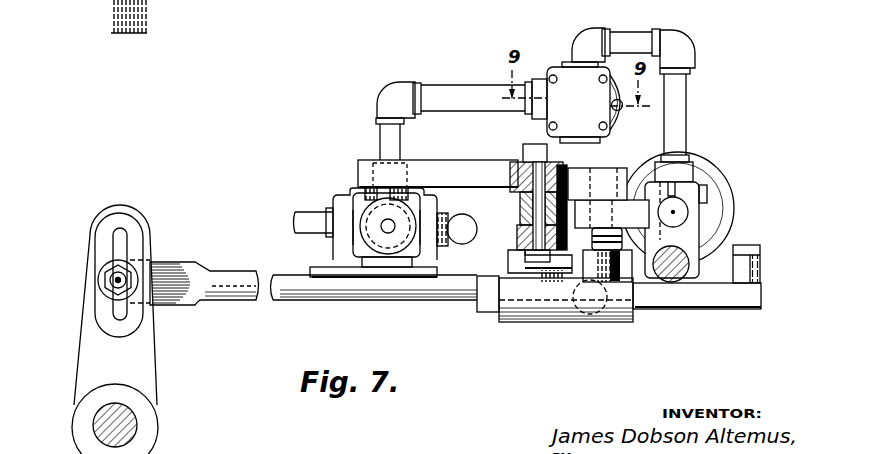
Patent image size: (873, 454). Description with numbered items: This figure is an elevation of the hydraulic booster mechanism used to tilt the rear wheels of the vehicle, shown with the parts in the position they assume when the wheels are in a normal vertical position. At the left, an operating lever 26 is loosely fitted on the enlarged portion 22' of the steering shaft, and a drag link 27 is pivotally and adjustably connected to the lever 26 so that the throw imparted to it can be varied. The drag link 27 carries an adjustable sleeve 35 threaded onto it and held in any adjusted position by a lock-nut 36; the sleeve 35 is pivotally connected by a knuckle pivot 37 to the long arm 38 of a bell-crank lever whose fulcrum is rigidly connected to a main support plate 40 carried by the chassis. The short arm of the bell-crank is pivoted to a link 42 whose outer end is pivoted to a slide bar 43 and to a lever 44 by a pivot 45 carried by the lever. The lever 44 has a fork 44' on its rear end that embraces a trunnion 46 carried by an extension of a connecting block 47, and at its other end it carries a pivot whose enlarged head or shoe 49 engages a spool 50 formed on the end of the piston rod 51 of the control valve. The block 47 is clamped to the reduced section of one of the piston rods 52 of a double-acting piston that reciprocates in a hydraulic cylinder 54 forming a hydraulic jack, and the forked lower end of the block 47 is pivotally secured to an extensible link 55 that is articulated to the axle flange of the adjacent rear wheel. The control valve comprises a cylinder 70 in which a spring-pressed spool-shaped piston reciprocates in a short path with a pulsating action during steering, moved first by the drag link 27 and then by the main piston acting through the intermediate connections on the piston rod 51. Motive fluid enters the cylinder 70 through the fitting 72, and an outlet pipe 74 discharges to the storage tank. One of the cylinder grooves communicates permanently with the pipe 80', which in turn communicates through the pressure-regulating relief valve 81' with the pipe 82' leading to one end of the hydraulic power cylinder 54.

The operating lever 26 is at (84, 351).
The enlarged portion of shaft 22' is at (83, 424).
The drag link 27 is at (187, 305).
The lock-nut 36 is at (486, 305).
The adjustable sleeve 35 is at (556, 322).
The knuckle pivot 37 is at (588, 314).
The main support plate 40 is at (748, 306).
The cylinder of control valve 70 is at (345, 194).
The enlarged head or shoe 49 is at (375, 200).
The spool 50 is at (370, 240).
The piston rod of control valve 51 is at (388, 229).
The outlet pipe 74 is at (312, 222).
The fitting 72 is at (461, 238).
The lever 44 is at (438, 134).
The fork 44' is at (576, 195).
The pivot 45 is at (528, 176).
The slide bar 43 is at (520, 204).
The link 42 is at (517, 236).
The trunnion 46 is at (605, 172).
The connecting block 47 is at (688, 230).
The piston rod 52 is at (686, 212).
The hydraulic cylinder 54 is at (708, 176).
The extensible link 55 is at (672, 282).
The long arm of bell-crank lever 38 is at (526, 265).
The pipe 80' is at (480, 86).
The relief valve 81' is at (581, 85).
The pipe 82' is at (633, 37).